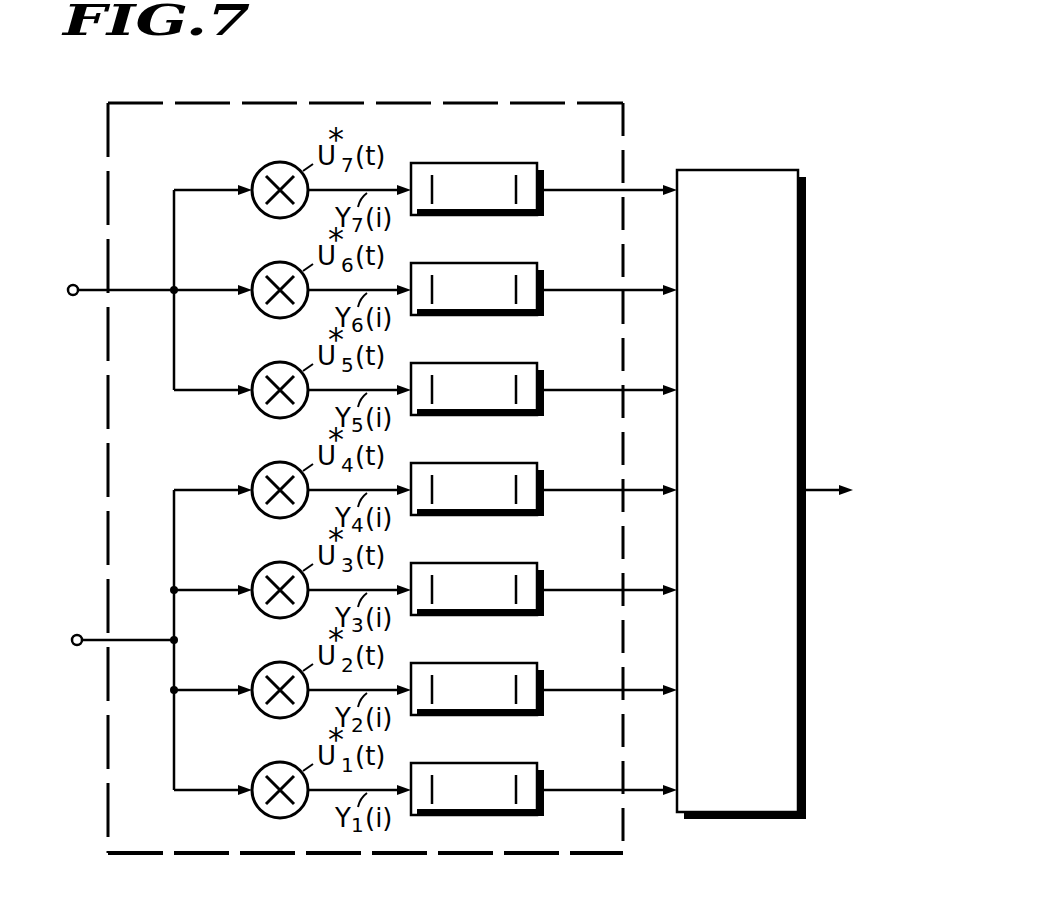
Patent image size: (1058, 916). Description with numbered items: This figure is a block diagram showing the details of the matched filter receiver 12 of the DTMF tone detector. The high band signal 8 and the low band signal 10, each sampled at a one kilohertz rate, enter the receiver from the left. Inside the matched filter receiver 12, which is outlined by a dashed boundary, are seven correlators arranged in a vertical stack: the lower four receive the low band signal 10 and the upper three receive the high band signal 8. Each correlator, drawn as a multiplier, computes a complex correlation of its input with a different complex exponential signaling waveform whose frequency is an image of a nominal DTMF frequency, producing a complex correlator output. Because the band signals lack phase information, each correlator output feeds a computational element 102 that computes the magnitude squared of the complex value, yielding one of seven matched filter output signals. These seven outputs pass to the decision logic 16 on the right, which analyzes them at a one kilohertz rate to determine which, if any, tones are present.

The high band signal 8 is at (68, 284).
The low band signal 10 is at (74, 633).
The matched filter receiver 12 is at (455, 103).
The decision logic 16 is at (728, 169).
The computational elements 102 is at (470, 163).